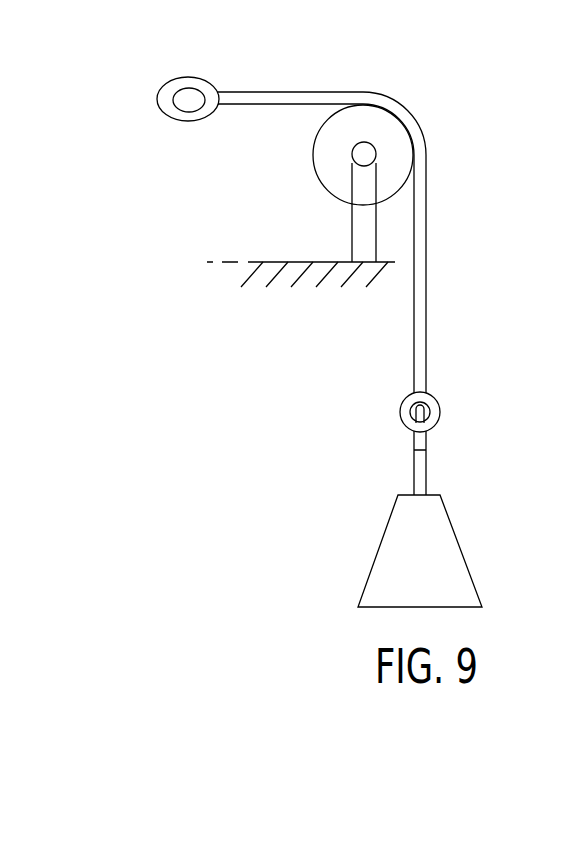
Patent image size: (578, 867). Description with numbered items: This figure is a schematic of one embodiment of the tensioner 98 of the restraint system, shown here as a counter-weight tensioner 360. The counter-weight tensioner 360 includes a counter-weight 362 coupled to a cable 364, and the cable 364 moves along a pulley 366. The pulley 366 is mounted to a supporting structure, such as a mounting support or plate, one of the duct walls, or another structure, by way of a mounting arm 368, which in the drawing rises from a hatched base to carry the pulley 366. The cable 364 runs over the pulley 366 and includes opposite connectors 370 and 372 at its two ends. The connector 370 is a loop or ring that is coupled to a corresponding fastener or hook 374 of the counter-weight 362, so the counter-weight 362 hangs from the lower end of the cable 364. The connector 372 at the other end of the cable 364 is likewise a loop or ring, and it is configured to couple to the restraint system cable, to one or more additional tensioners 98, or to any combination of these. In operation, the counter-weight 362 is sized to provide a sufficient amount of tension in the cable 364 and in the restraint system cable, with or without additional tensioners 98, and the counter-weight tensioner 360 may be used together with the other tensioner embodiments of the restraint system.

The tensioner 98 is at (458, 92).
The counter-weight tensioner 360 is at (470, 187).
The counter-weight 362 is at (463, 553).
The cable 364 is at (424, 259).
The pulley 366 is at (318, 172).
The mounting arm 368 is at (360, 228).
The connector 370 is at (434, 402).
The connector 372 is at (171, 83).
The fastener or hook 374 is at (419, 435).